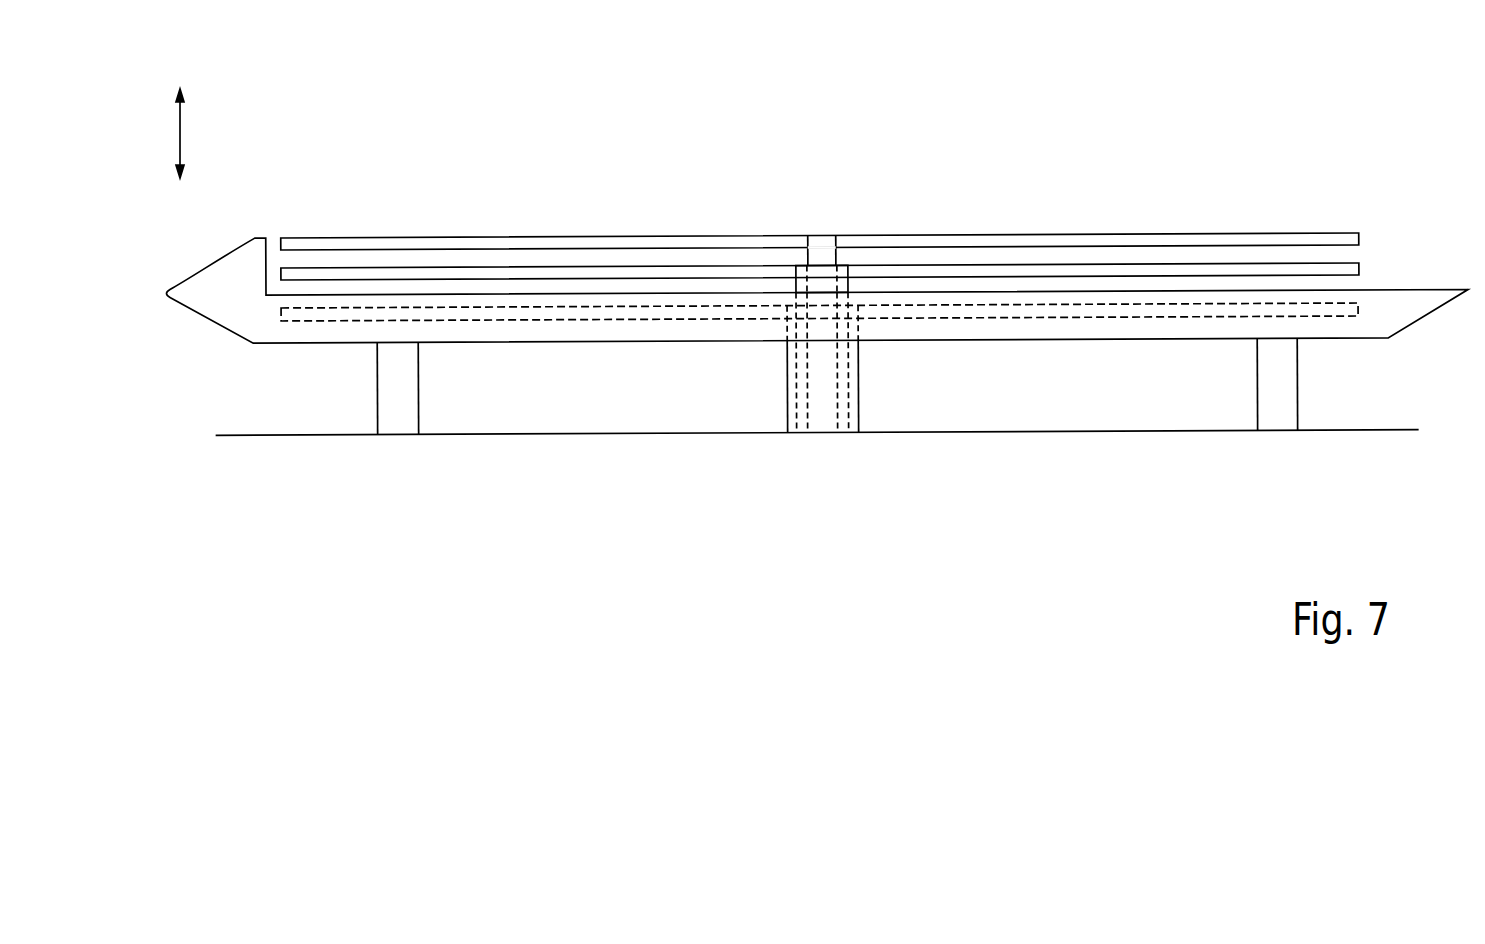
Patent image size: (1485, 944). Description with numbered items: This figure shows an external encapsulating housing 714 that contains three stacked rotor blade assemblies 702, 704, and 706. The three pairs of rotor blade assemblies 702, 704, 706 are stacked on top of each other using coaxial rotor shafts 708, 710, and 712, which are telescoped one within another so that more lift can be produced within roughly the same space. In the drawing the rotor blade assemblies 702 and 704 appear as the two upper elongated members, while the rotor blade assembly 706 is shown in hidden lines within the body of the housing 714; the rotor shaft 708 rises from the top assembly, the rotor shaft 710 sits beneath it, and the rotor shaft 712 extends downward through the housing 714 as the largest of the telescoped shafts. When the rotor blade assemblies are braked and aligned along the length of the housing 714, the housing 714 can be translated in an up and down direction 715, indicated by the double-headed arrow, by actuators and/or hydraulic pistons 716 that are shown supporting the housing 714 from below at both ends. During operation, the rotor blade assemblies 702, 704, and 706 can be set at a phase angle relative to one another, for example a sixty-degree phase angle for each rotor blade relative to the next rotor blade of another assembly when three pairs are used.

The rotor blade assembly 702 is at (1042, 238).
The rotor blade assembly 704 is at (1098, 272).
The rotor blade assembly 706 is at (1158, 308).
The rotor shaft 708 is at (820, 252).
The rotor shaft 710 is at (850, 270).
The rotor shaft 712 is at (859, 370).
The housing 714 is at (586, 73).
The up and down direction 715 is at (182, 137).
The actuators and/or hydraulic pistons 716 is at (408, 398).